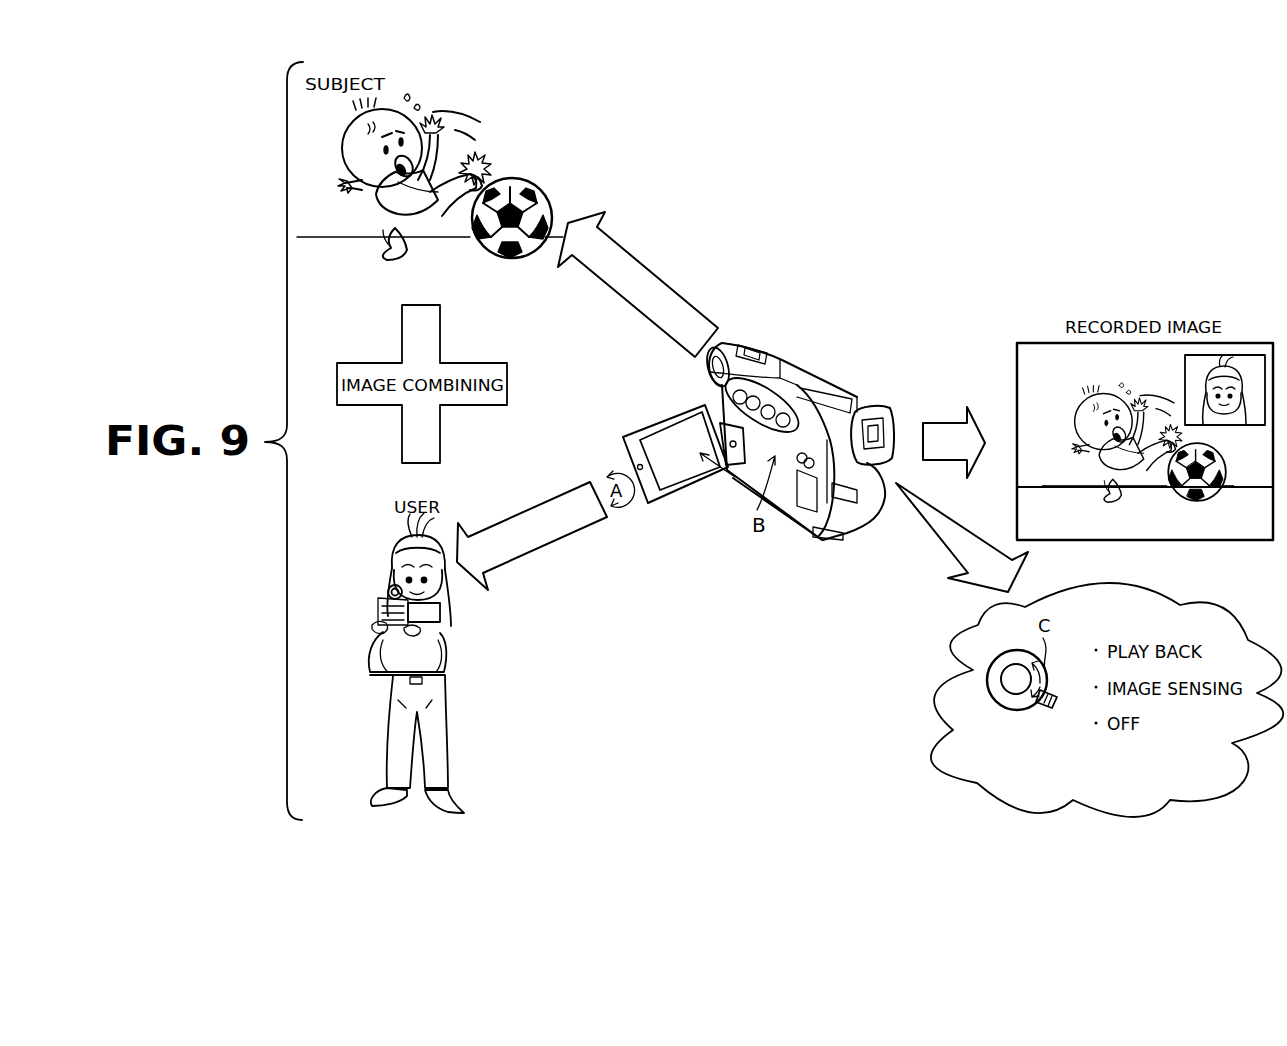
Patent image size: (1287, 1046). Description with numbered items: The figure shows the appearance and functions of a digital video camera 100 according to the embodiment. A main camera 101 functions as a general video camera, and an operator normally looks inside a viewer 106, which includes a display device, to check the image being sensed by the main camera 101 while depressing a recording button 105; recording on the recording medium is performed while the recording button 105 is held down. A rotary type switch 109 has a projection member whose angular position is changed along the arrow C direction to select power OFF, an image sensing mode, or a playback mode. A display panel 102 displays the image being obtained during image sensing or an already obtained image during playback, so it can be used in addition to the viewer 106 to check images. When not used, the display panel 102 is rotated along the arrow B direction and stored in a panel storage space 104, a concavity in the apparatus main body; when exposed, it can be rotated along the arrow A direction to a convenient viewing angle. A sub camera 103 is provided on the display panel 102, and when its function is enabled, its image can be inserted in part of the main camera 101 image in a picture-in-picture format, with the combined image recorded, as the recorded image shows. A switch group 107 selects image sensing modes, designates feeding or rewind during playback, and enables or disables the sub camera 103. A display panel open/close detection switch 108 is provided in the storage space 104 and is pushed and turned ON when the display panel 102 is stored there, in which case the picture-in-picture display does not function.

The video camera 100 is at (765, 328).
The main camera 101 is at (722, 340).
The display panel 102 is at (655, 508).
The sub camera 103 is at (637, 452).
The panel storage space 104 is at (785, 485).
The recording button 105 is at (1013, 687).
The viewer 106 is at (888, 410).
The switch group 107 is at (770, 388).
The display panel open/close detection switch 108 is at (727, 465).
The rotary type switch 109 is at (1048, 708).